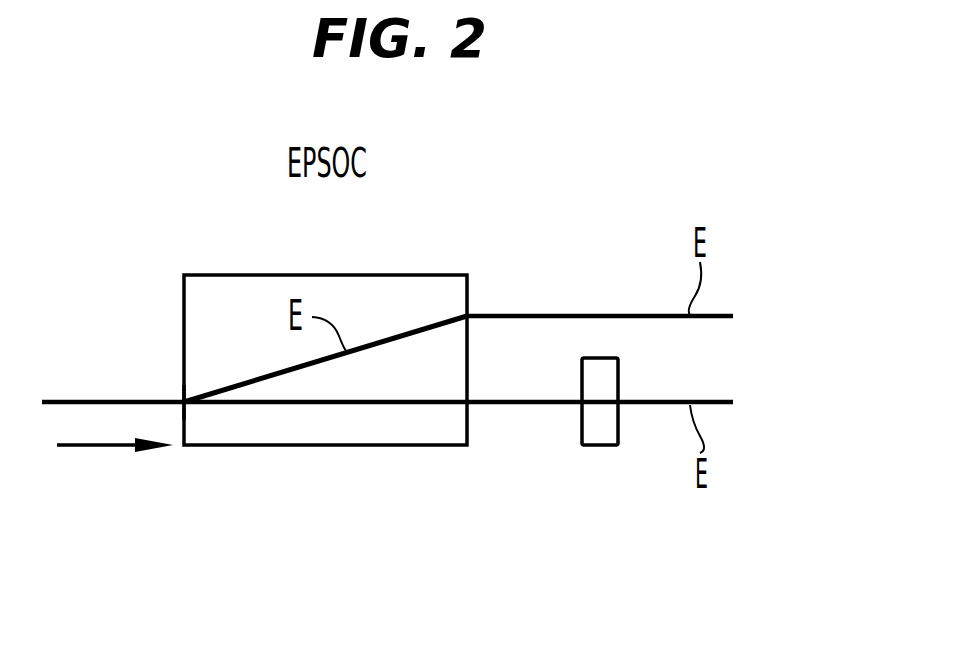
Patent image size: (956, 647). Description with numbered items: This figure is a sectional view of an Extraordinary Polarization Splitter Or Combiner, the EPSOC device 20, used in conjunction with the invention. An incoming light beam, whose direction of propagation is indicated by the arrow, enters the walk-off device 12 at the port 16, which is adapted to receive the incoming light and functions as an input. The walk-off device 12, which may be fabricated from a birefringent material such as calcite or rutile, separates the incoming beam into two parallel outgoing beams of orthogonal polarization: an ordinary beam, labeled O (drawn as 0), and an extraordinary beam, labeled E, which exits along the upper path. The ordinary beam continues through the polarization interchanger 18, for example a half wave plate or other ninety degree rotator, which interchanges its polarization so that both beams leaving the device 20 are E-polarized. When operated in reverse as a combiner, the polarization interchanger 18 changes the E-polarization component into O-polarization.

The EPSOC device 20 is at (540, 249).
The input light beam 0 is at (273, 403).
The walk-off device 12 is at (423, 445).
The port 16 is at (184, 403).
The polarization interchanger 18 is at (595, 445).